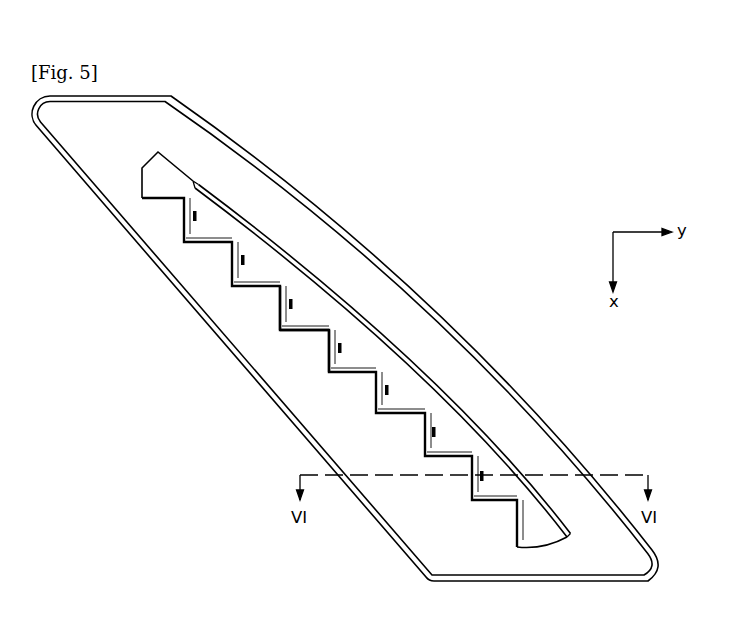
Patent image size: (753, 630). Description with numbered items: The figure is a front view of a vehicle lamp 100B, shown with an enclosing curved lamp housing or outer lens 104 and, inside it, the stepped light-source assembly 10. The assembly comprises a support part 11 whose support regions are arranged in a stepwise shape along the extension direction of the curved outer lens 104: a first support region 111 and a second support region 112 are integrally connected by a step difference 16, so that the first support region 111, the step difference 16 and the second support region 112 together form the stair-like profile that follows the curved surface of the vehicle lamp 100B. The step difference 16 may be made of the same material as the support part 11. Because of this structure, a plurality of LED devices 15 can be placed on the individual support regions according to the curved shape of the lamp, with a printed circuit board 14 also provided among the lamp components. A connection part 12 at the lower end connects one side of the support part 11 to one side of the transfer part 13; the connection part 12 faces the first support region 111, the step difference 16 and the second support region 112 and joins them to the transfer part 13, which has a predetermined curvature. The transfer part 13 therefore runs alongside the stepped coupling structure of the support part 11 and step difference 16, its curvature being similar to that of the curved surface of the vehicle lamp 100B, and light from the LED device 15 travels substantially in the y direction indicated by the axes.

The lighting unit 10 is at (260, 214).
The support part 11 is at (230, 265).
The connection part 12 is at (540, 533).
The transfer part 13 is at (324, 274).
The printed circuit board 14 is at (433, 427).
The LED device 15 is at (388, 390).
The step difference 16 is at (302, 331).
The vehicle lamp 100B is at (481, 246).
The outer lens 104 is at (567, 444).
The first support region 111 is at (280, 310).
The second support region 112 is at (332, 355).